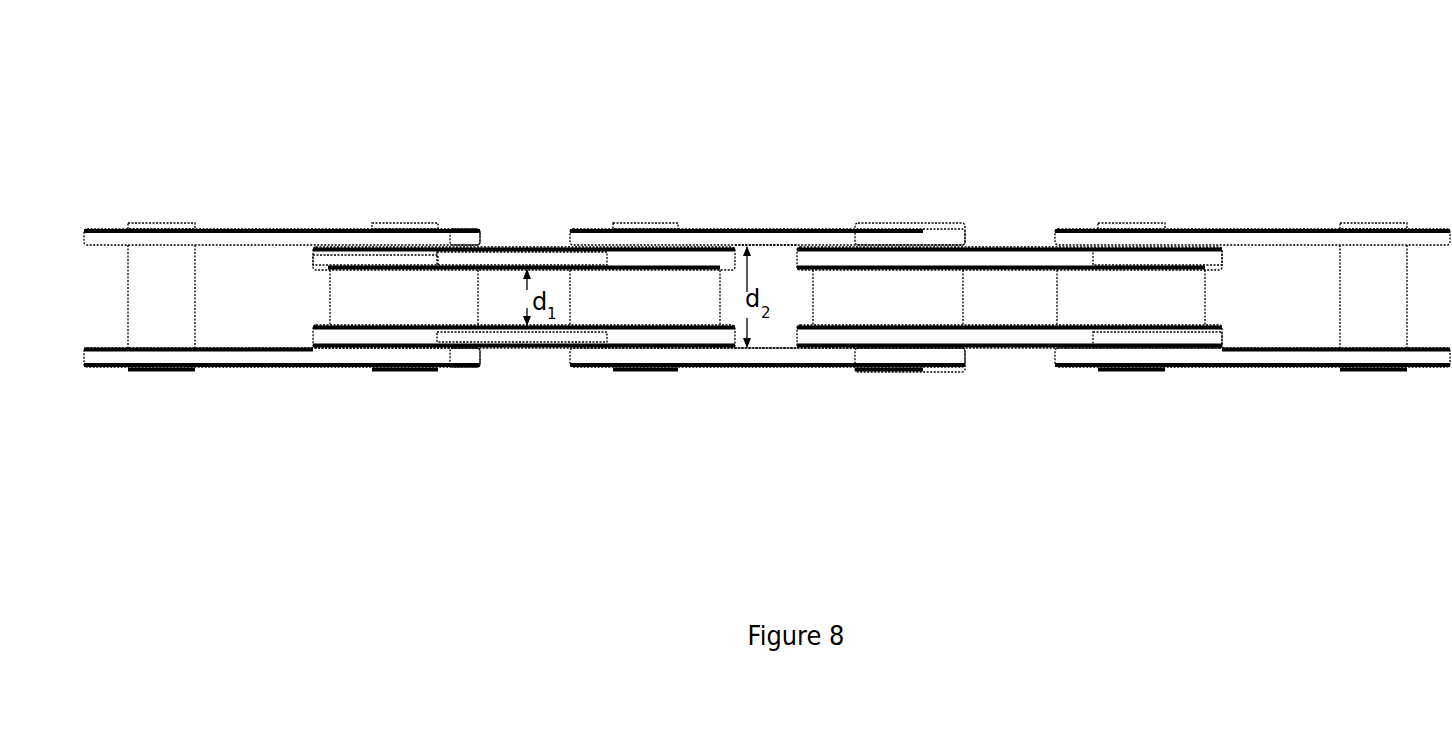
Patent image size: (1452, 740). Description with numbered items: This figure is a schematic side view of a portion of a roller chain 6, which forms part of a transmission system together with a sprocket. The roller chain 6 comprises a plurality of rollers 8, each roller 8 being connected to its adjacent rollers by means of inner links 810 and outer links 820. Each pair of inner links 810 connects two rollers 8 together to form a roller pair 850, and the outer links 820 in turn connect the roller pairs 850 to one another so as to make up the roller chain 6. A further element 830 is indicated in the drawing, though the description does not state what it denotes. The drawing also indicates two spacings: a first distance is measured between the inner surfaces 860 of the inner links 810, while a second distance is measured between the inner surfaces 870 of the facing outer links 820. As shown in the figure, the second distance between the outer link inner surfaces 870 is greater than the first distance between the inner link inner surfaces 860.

The roller chain 6 is at (226, 147).
The roller 8 is at (407, 297).
The inner link 810 is at (543, 243).
The outer link 820 is at (770, 238).
The roller bushing 830 is at (895, 290).
The roller pair 850 is at (612, 240).
The inner surface of inner link 860 is at (556, 326).
The inner surface of outer link 870 is at (788, 253).